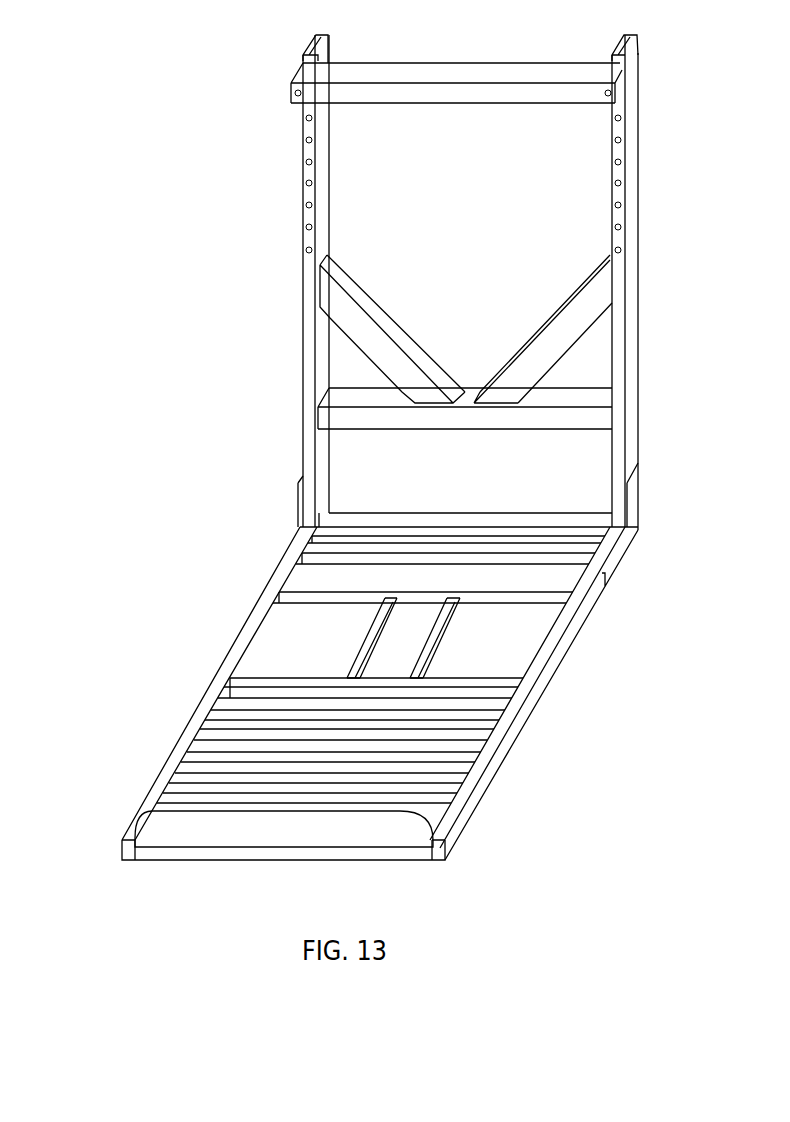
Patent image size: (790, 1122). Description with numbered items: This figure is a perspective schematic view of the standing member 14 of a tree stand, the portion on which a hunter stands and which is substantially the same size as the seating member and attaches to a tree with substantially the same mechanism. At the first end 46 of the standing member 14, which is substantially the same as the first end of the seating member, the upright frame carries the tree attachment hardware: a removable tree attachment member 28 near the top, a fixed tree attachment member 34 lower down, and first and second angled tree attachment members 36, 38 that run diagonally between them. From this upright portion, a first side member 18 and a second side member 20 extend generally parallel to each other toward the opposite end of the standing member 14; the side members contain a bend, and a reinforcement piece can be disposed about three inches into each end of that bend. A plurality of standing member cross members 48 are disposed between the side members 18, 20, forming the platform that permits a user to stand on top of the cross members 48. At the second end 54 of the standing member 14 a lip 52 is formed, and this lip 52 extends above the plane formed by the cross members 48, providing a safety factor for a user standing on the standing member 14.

The standing member 14 is at (125, 175).
The first end 46 is at (237, 73).
The removable tree attachment member 28 is at (387, 95).
The fixed tree attachment member 34 is at (448, 420).
The first angled tree attachment member 36 is at (367, 330).
The second angled tree attachment member 38 is at (542, 350).
The second end 54 is at (481, 877).
The second side member 20 is at (183, 747).
The first side member 18 is at (483, 785).
The standing member cross members 48 is at (515, 560).
The lip 52 is at (293, 843).